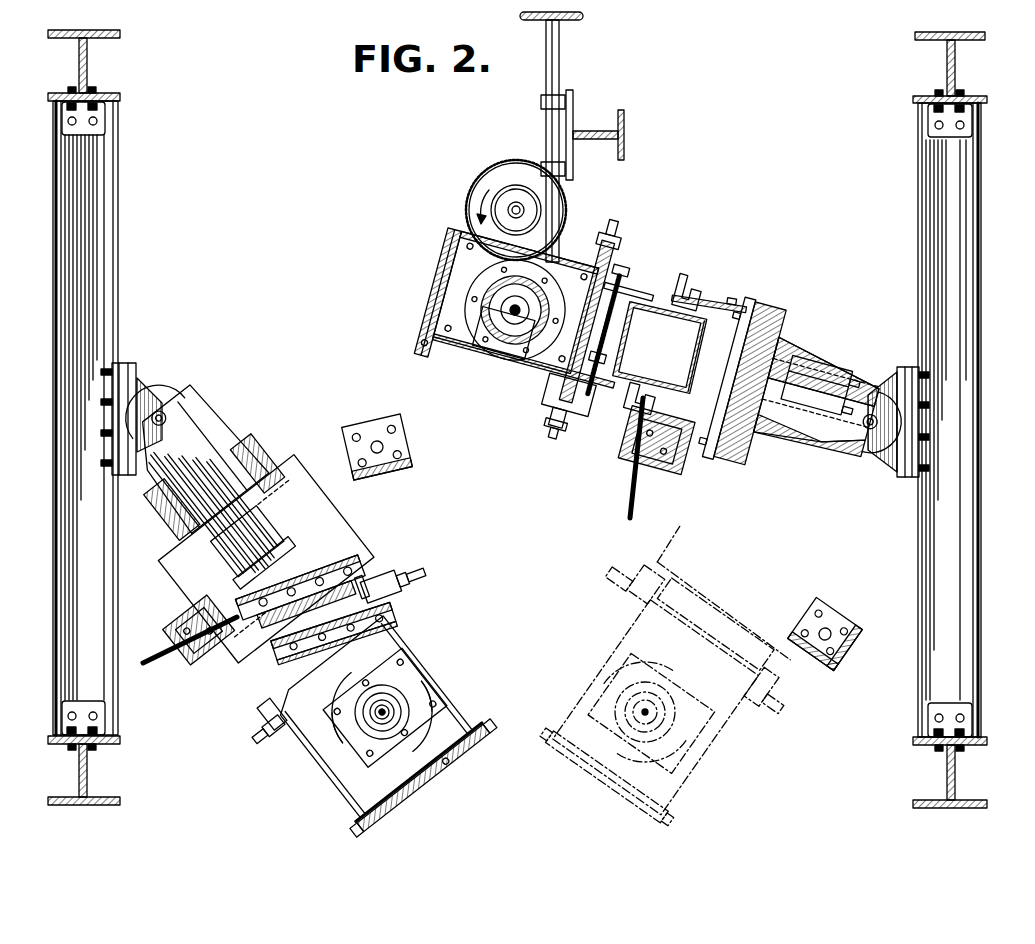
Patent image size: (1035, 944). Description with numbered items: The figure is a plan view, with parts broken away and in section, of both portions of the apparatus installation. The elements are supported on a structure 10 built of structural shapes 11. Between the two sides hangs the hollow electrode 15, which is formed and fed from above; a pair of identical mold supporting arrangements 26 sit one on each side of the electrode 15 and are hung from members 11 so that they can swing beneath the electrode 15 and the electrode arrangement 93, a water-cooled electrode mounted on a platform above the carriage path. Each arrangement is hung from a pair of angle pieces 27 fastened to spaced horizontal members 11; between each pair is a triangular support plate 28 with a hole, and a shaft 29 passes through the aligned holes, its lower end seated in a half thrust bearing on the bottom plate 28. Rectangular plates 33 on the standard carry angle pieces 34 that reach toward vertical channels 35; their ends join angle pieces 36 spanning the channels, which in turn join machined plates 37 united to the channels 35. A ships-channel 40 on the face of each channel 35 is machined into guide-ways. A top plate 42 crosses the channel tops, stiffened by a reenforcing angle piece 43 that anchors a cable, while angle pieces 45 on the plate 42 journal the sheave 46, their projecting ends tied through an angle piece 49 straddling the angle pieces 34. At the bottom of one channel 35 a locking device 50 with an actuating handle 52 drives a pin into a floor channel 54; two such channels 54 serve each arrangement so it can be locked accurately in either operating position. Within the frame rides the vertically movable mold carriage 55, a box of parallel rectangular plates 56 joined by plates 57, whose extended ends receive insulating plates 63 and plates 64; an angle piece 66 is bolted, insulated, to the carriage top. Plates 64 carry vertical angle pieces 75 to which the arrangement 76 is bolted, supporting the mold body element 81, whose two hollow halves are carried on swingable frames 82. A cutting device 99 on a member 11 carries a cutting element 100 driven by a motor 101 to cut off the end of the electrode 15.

The structure 10 is at (1030, 84).
The structural shapes 11 is at (105, 245).
The hollow electrode 15 is at (522, 305).
The mold supporting arrangement 26 is at (658, 272).
The angle pieces 27 is at (906, 372).
The triangular support plate 28 is at (895, 465).
The shaft 29 is at (862, 430).
The rectangular plates 33 is at (820, 447).
The angle pieces 34 is at (790, 348).
The vertical channels 35 is at (712, 303).
The angle pieces 36 is at (790, 302).
The plates 37 is at (768, 292).
The ships-channel 40 is at (612, 428).
The top plate 42 is at (322, 515).
The reenforcing angle piece 43 is at (345, 568).
The angle pieces 45 is at (275, 522).
The sheave 46 is at (268, 560).
The angle piece 49 is at (805, 378).
The locking device 50 is at (655, 476).
The actuating handle 52 is at (634, 494).
The channel piece 54 is at (408, 447).
The mold carriage 55 is at (690, 384).
The rectangular plates 56 is at (660, 348).
The plates 57 is at (660, 348).
The plates 63 is at (630, 348).
The plates 64 is at (568, 383).
The angle piece 66 is at (262, 660).
The vertical angle pieces 75 is at (388, 592).
The arrangement 76 is at (483, 365).
The mold body element 81 is at (515, 345).
The frames 82 is at (456, 258).
The electrode arrangement 93 is at (650, 718).
The cutting device 99 is at (590, 100).
The cutting element 100 is at (472, 215).
The motor 101 is at (515, 200).